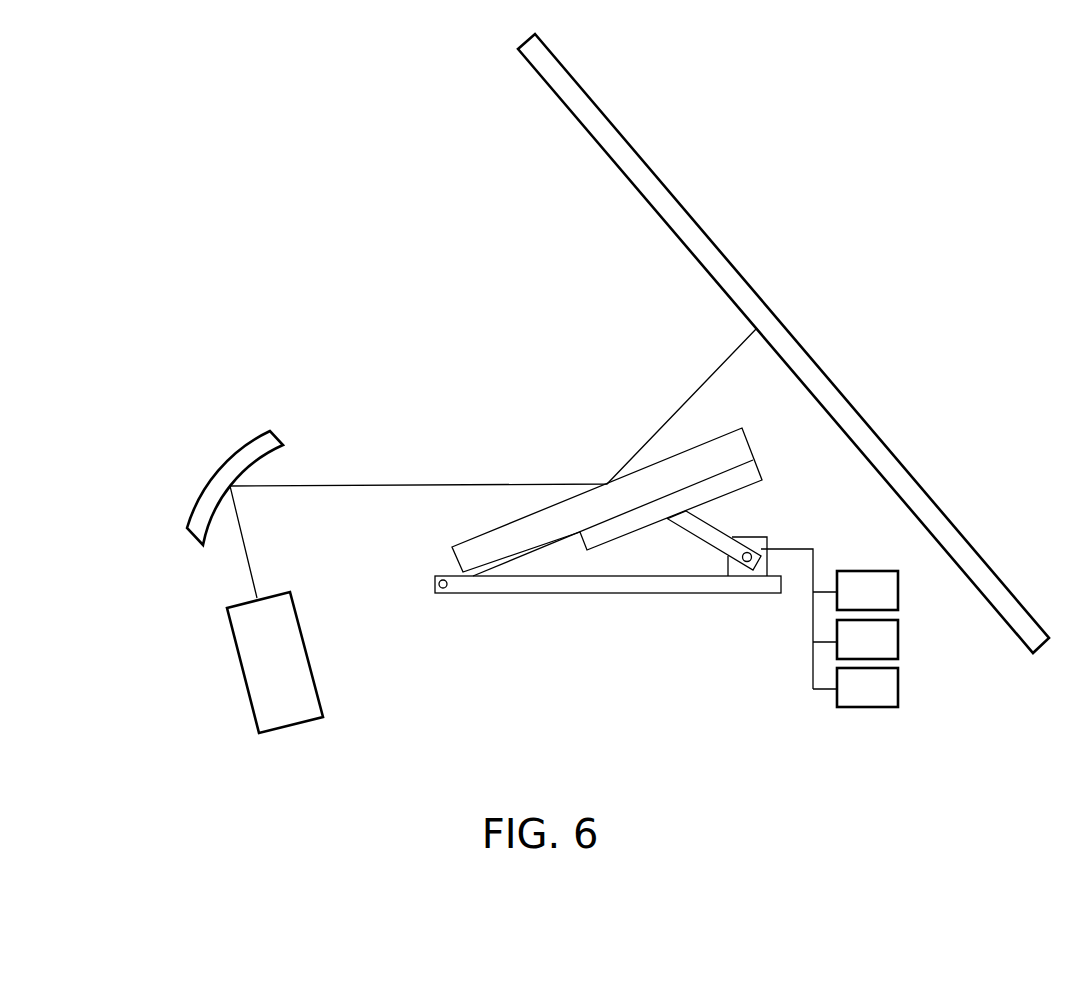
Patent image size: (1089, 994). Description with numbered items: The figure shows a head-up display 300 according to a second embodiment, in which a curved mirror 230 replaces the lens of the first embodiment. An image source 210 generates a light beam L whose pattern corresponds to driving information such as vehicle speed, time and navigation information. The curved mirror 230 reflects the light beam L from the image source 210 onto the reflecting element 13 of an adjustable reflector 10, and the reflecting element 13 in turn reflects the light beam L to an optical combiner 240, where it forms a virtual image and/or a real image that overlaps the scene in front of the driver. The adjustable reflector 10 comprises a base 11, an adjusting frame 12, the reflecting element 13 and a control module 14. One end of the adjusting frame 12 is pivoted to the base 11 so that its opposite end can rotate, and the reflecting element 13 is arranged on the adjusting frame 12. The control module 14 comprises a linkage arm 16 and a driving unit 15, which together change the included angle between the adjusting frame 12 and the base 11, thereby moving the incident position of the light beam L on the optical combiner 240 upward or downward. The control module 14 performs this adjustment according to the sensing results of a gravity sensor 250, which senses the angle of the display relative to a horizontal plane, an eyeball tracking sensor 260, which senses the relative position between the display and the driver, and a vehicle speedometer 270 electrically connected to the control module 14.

The head-up display 300 is at (193, 155).
The image source 210 is at (287, 722).
The curved mirror 230 is at (190, 533).
The light beam L is at (262, 547).
The optical combiner 240 is at (973, 582).
The adjustable reflector 10 is at (565, 622).
The base 11 is at (633, 593).
The adjusting frame 12 is at (498, 559).
The reflecting element 13 is at (741, 440).
The control module 14 is at (790, 513).
The driving unit 15 is at (767, 537).
The linkage arm 16 is at (708, 538).
The gravity sensor 250 is at (867, 590).
The eyeball tracking sensor 260 is at (867, 639).
The speedometer 270 is at (867, 687).